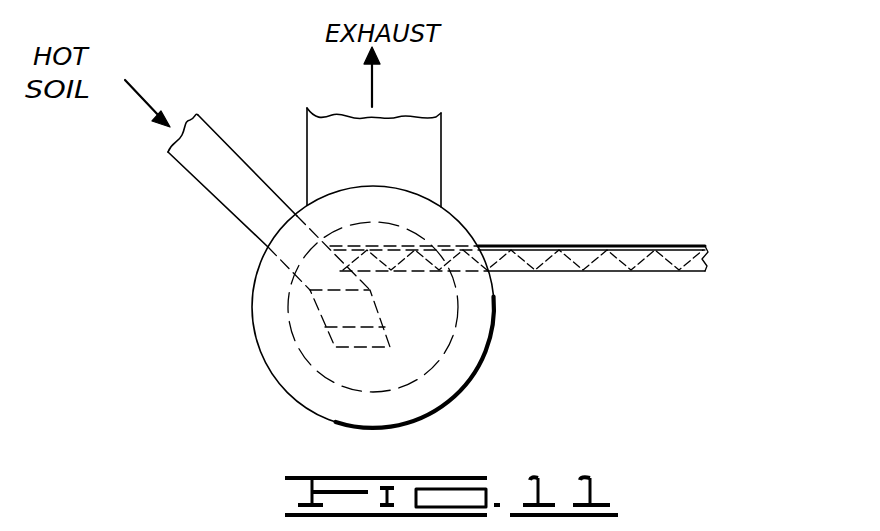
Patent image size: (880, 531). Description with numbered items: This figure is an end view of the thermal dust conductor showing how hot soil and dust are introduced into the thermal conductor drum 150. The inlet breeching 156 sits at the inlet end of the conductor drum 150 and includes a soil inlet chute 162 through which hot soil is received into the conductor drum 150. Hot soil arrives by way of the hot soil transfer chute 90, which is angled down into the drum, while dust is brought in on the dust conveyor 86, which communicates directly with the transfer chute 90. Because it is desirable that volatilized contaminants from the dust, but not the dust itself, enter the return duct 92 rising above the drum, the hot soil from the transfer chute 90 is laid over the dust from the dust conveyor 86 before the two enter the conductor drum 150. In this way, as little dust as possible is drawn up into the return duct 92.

The dust conveyor 86 is at (552, 238).
The hot soil transfer chute 90 is at (242, 178).
The return duct 92 is at (418, 148).
The thermal conductor drum 150 is at (440, 357).
The inlet breeching 156 is at (495, 333).
The soil inlet chute 162 is at (268, 248).